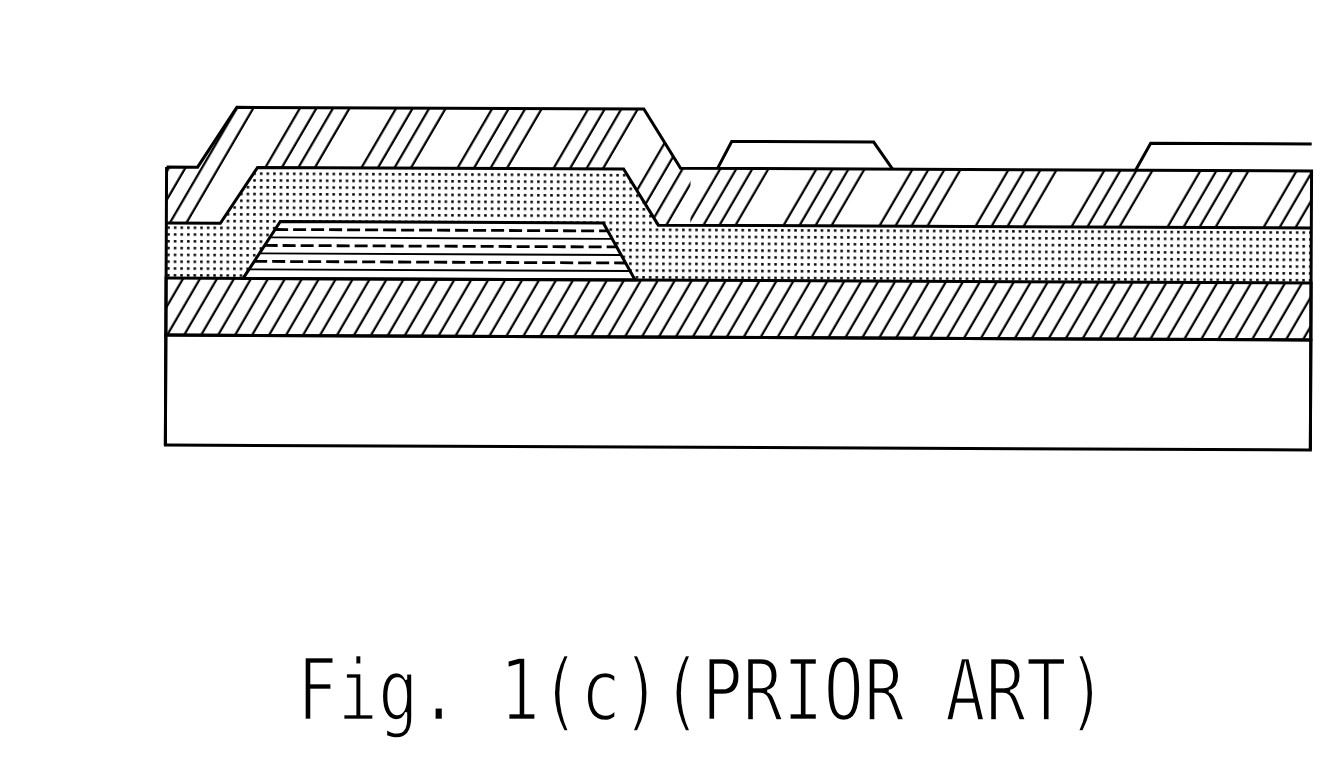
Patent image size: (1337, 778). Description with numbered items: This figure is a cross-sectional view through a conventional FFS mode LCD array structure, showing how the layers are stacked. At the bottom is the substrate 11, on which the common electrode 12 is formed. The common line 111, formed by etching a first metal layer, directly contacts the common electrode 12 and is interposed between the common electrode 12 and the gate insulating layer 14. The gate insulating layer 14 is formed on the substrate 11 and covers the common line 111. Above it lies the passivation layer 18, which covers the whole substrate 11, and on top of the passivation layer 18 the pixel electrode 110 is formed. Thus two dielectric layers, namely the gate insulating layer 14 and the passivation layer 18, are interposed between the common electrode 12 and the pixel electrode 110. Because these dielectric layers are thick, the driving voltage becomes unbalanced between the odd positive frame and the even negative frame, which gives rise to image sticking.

The substrate 11 is at (183, 365).
The common electrode 12 is at (187, 310).
The gate insulating layer 14 is at (183, 251).
The passivation layer 18 is at (242, 143).
The pixel electrode 110 is at (797, 158).
The common line 111 is at (333, 255).